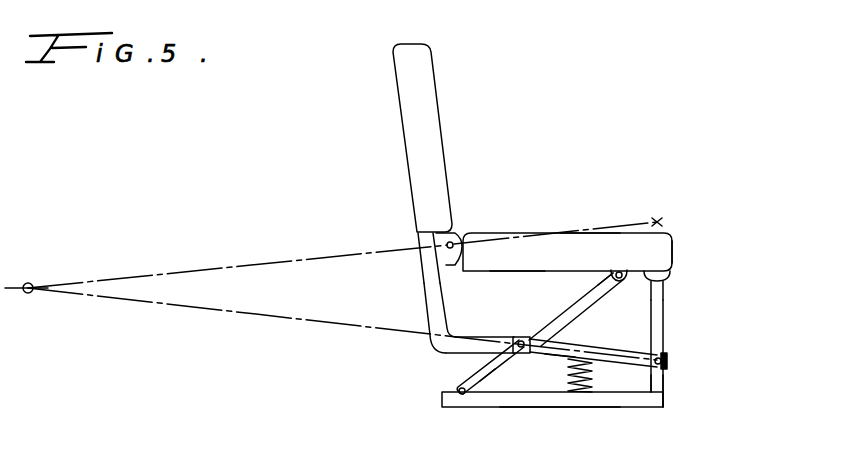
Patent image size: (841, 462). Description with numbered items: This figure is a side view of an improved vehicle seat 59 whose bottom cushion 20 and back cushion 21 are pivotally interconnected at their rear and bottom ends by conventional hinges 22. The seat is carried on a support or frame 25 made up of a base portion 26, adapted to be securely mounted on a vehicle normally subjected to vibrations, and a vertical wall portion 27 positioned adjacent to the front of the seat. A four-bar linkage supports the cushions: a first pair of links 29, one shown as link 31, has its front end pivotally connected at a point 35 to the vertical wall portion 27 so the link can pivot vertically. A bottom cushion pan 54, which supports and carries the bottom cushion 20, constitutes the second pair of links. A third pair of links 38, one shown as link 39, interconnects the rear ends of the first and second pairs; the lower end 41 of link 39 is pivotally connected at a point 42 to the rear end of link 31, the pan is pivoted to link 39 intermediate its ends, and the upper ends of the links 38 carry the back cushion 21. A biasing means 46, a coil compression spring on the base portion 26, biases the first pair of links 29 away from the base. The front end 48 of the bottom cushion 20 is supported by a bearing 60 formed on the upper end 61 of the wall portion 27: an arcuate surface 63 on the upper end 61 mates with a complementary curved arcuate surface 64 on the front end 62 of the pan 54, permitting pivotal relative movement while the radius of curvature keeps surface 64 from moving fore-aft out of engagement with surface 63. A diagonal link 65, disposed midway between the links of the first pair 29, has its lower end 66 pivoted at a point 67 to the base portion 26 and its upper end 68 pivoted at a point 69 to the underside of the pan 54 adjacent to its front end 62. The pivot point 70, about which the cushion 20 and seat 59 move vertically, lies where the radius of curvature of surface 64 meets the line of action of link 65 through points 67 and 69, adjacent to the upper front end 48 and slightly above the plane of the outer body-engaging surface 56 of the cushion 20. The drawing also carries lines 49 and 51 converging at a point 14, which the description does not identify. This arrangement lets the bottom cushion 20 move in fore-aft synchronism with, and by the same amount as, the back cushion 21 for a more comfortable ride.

The pivot axis point 14 is at (29, 283).
The bottom cushion 20 is at (498, 245).
The back cushion 21 is at (420, 73).
The hinges 22 is at (453, 242).
The support or frame 25 is at (529, 412).
The base portion 26 is at (557, 407).
The vertical wall portion 27 is at (660, 385).
The first pair of links 29 is at (584, 343).
The link 31 is at (556, 355).
The pivot point 35 is at (666, 361).
The third pair of links 38 is at (414, 263).
The link 39 is at (428, 302).
The lower end of link 41 is at (468, 337).
The pivot point 42 is at (521, 340).
The biasing means 46 is at (597, 380).
The front end of bottom cushion 48 is at (673, 246).
The lower axis line 49 is at (180, 307).
The upper axis line 51 is at (239, 266).
The bottom cushion pan 54 is at (519, 272).
The outer surface of cushion 56 is at (586, 232).
The improved seat 59 is at (530, 165).
The bearing 60 is at (713, 326).
The upper end of vertical wall portion 61 is at (662, 316).
The front end of bottom cushion pan 62 is at (628, 262).
The arcuate surface 63 is at (672, 285).
The arcuate surface 64 is at (662, 273).
The diagonal link 65 is at (470, 366).
The lower end of diagonal link 66 is at (485, 385).
The pivot point 67 is at (459, 390).
The upper end of diagonal link 68 is at (586, 294).
The pivot point 69 is at (624, 281).
The pivot point 70 is at (659, 221).